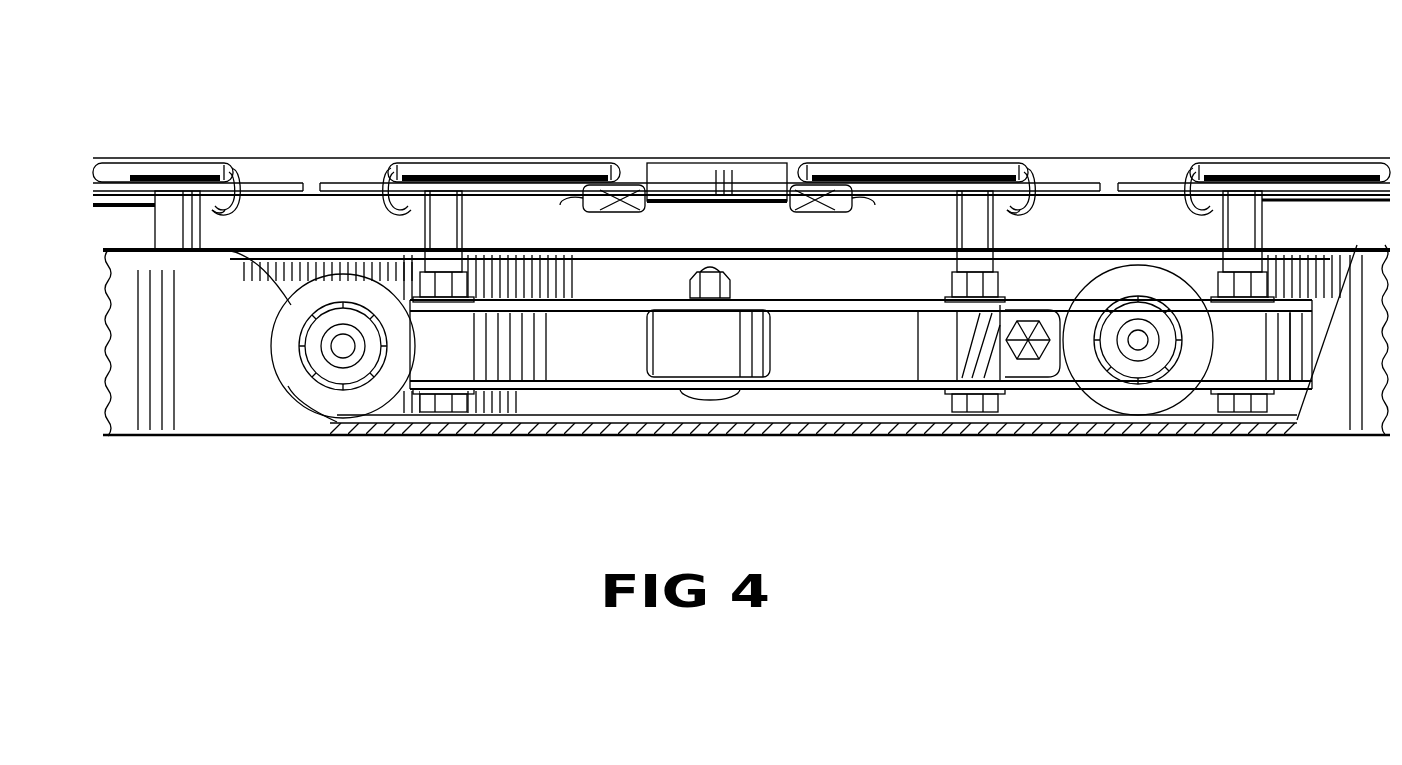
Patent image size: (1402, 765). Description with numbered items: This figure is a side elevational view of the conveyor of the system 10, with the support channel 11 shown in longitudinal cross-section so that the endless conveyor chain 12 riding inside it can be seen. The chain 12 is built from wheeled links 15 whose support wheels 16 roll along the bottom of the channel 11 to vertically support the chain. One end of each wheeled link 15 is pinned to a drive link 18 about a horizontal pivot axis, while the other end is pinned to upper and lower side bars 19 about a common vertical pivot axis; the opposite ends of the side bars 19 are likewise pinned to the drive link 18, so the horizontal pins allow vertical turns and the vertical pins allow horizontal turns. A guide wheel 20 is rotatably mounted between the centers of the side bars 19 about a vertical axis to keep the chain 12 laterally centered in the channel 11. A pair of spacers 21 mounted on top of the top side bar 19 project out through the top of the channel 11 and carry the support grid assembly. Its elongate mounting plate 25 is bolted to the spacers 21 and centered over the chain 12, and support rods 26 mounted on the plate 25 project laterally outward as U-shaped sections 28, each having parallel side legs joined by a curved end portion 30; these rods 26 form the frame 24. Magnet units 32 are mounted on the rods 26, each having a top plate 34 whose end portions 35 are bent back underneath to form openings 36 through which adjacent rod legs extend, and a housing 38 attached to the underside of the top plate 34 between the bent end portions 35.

The system 10 is at (722, 130).
The support channel 11 is at (782, 420).
The endless conveyor chain 12 is at (575, 395).
The wheeled links 15 is at (433, 365).
The support wheels 16 is at (350, 406).
The drive link 18 is at (920, 347).
The upper and lower side bars 19 is at (796, 310).
The guide wheel 20 is at (648, 345).
The spacers 21 is at (158, 232).
The frame 24 is at (288, 193).
The mounting plate 25 is at (286, 188).
The support rods 26 is at (228, 161).
The U-shaped sections 28 is at (195, 161).
The curved end portion 30 is at (135, 162).
The magnet units 32 is at (212, 158).
The top plate 34 is at (147, 161).
The end portions 35 is at (597, 207).
The openings 36 is at (226, 176).
The housing 38 is at (538, 200).